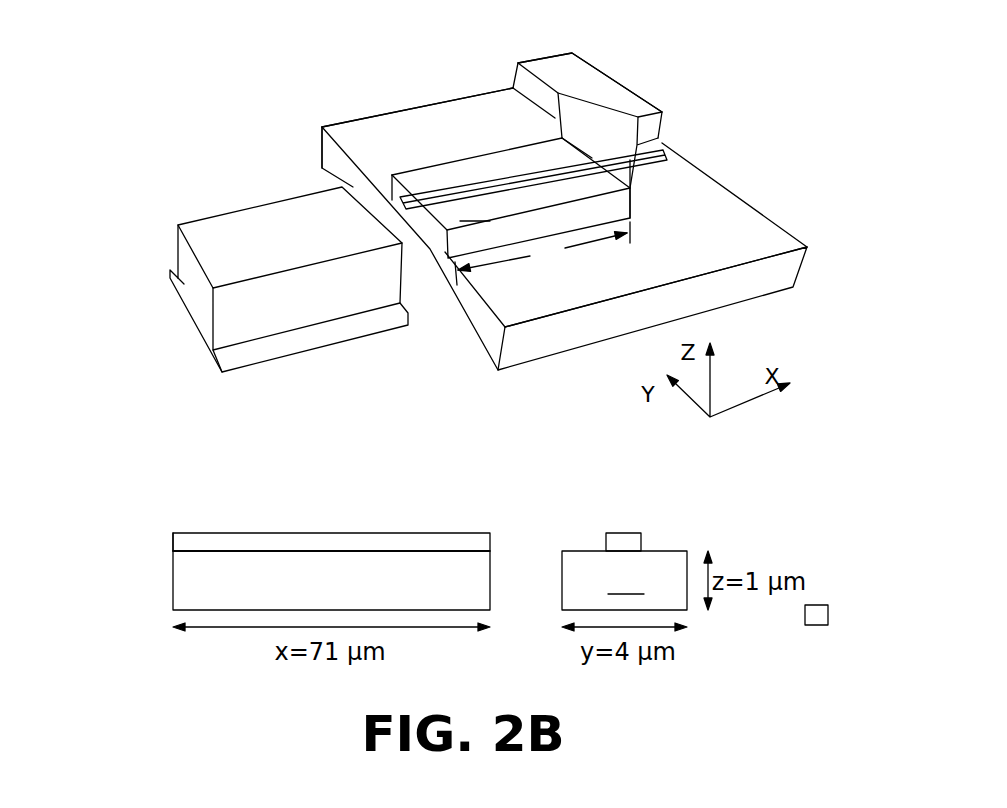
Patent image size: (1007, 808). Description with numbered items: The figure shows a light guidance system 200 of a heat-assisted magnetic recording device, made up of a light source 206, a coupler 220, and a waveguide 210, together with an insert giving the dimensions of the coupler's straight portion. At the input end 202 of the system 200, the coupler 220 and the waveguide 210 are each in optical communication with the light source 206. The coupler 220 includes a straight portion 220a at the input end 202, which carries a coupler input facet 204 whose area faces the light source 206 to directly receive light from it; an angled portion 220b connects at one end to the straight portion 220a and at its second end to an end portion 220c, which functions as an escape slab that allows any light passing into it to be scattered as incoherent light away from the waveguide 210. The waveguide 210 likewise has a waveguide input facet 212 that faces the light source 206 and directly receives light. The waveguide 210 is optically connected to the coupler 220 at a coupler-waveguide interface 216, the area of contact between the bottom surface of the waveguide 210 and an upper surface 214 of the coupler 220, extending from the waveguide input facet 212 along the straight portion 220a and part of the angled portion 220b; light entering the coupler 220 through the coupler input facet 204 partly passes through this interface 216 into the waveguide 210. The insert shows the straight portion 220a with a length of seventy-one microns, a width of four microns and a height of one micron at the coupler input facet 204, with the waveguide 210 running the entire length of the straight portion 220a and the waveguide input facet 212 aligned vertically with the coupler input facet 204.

The light guidance system 200 is at (728, 88).
The input end 202 is at (375, 152).
The coupler input facet 204 is at (430, 258).
The light source 206 is at (237, 238).
The waveguide 210 is at (655, 150).
The waveguide input facet 212 is at (398, 192).
The upper surface of coupler 214 is at (418, 540).
The coupler-waveguide interface 216 is at (161, 551).
The coupler 220 is at (473, 160).
The straight portion 220a is at (500, 165).
The angled portion 220b is at (608, 132).
The end portion 220c is at (577, 83).